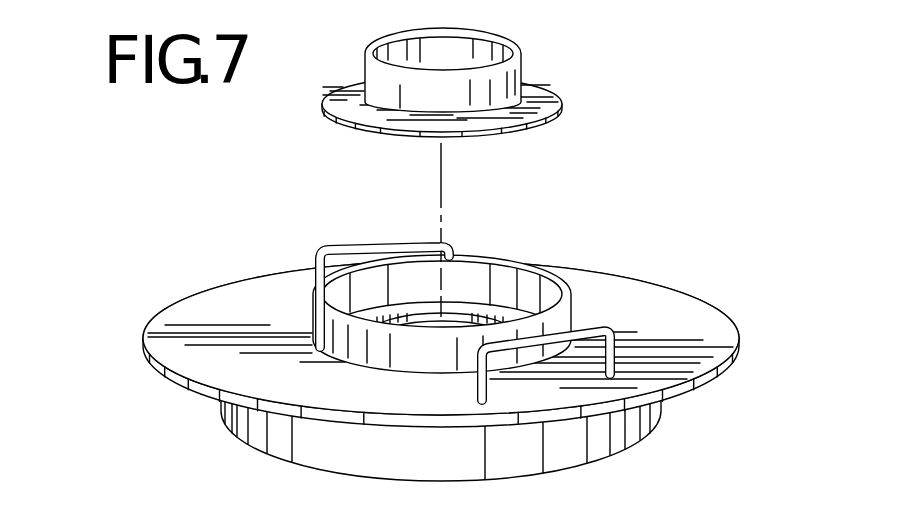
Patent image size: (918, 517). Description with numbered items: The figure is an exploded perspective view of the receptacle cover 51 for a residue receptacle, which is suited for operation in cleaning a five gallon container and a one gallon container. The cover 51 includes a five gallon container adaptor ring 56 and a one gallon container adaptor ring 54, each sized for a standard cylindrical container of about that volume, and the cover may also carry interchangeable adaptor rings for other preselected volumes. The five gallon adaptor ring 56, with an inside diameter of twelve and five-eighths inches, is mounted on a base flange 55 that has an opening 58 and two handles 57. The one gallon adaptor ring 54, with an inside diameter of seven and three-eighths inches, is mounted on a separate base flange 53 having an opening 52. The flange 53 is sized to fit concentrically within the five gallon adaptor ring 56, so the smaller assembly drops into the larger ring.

The receptacle cover 51 is at (774, 18).
The opening 52 is at (458, 48).
The base flange 53 is at (563, 100).
The one gallon container adaptor ring 54 is at (483, 75).
The base flange 55 is at (213, 307).
The five gallon container adaptor ring 56 is at (533, 260).
The handles 57 is at (452, 245).
The opening 58 is at (420, 325).